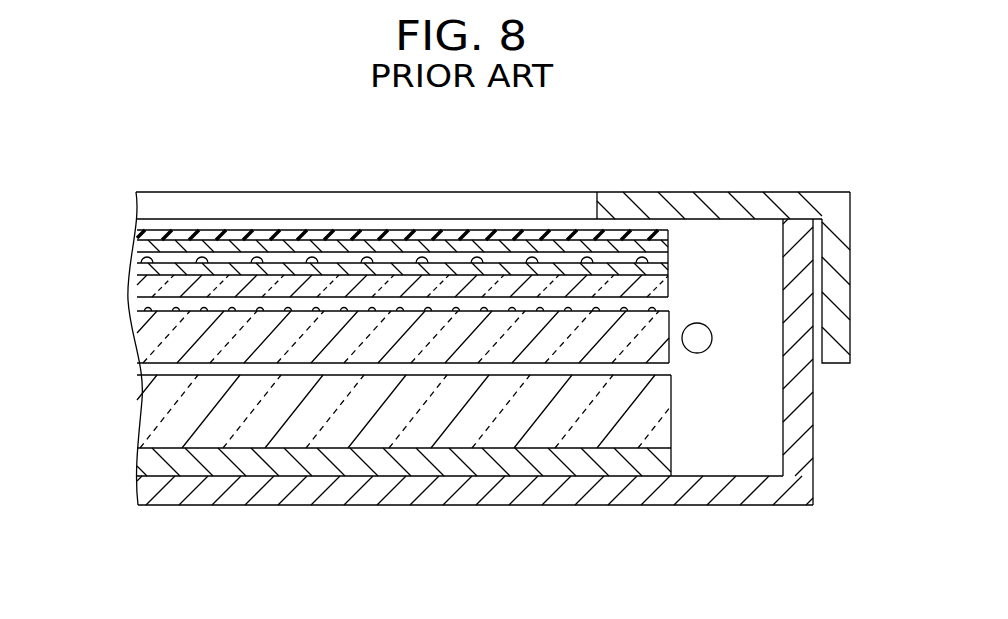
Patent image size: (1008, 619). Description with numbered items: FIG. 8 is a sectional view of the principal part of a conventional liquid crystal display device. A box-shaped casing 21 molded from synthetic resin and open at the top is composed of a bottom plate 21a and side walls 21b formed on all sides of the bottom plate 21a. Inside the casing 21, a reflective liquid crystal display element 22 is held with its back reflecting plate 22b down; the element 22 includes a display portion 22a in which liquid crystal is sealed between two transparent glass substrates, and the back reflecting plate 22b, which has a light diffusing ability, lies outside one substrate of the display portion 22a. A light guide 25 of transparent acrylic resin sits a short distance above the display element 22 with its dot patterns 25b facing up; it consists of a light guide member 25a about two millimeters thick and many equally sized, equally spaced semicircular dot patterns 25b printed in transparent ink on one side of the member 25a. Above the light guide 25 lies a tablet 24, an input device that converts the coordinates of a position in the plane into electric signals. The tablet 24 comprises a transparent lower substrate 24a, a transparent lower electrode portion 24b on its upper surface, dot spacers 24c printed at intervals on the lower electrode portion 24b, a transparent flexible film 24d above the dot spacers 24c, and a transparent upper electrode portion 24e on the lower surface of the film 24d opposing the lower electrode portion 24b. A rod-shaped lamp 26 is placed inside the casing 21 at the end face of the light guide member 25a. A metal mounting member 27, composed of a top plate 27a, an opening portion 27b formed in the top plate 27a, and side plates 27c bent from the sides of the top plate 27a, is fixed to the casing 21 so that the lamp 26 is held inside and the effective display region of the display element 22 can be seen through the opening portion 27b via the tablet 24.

The casing 21 is at (524, 408).
The bottom plate 21a is at (406, 505).
The side wall 21b is at (800, 432).
The reflective liquid crystal display element 22 is at (395, 470).
The display portion 22a is at (173, 412).
The back reflecting plate 22b is at (173, 460).
The tablet 24 is at (380, 220).
The lower substrate 24a is at (137, 290).
The lower electrode portion 24b is at (140, 272).
The dot spacer 24c is at (212, 240).
The film 24d is at (370, 238).
The upper electrode portion 24e is at (287, 242).
The light guide 25 is at (466, 348).
The light guide member 25a is at (173, 350).
The dot pattern 25b is at (150, 312).
The lamp 26 is at (708, 324).
The mounting member 27 is at (538, 238).
The top plate 27a is at (636, 208).
The opening portion 27b is at (483, 203).
The side plate 27c is at (838, 249).